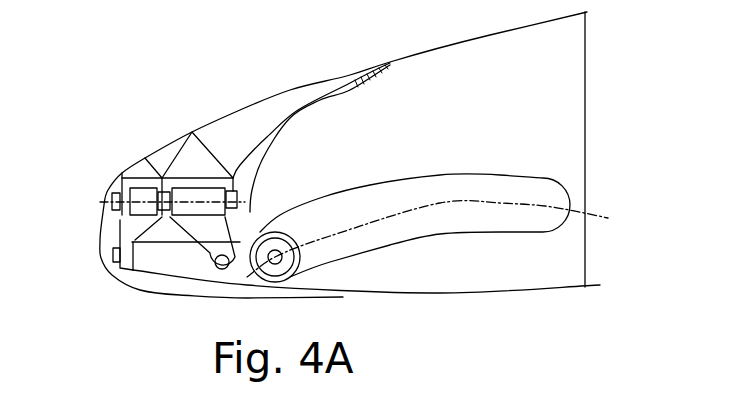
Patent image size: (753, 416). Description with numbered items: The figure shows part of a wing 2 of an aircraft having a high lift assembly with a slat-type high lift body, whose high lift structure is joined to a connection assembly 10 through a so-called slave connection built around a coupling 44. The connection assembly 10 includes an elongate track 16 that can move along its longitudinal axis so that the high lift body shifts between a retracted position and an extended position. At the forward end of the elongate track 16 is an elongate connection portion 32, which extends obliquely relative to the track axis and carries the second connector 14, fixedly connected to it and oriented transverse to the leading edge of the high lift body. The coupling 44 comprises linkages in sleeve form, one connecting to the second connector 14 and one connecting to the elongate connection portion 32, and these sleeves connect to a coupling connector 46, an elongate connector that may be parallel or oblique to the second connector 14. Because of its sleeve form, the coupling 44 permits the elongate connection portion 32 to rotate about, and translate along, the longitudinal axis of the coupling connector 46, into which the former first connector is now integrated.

The wing 2 is at (153, 97).
The connection assembly 10 is at (427, 199).
The second connector 14 is at (108, 255).
The elongate track 16 is at (430, 220).
The elongate connection portion 32 is at (167, 258).
The coupling 44 is at (133, 224).
The coupling connector 46 is at (113, 200).